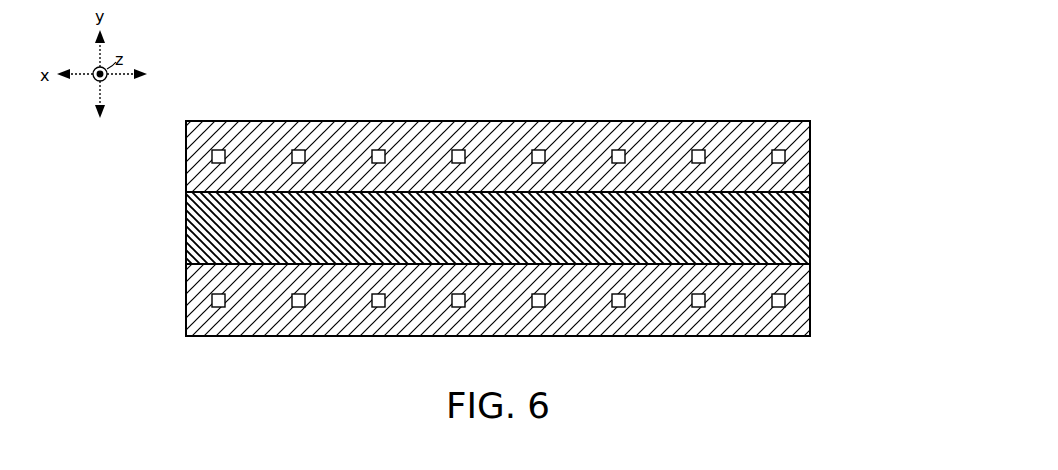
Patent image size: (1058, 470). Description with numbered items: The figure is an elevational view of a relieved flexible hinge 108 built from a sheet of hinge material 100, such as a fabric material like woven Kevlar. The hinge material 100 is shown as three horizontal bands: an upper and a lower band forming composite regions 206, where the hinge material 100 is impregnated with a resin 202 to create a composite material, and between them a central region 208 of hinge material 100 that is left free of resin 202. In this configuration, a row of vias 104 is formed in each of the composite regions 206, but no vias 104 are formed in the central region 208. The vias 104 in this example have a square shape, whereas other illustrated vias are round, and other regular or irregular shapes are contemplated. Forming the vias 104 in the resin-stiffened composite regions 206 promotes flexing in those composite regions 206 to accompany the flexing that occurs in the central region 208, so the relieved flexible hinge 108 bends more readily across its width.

The hinge material 100 is at (812, 232).
The vias 104 is at (373, 149).
The relieved flexible hinge 108 is at (593, 94).
The resin 202 is at (812, 162).
The composite regions 206 is at (185, 316).
The central region 208 is at (184, 236).